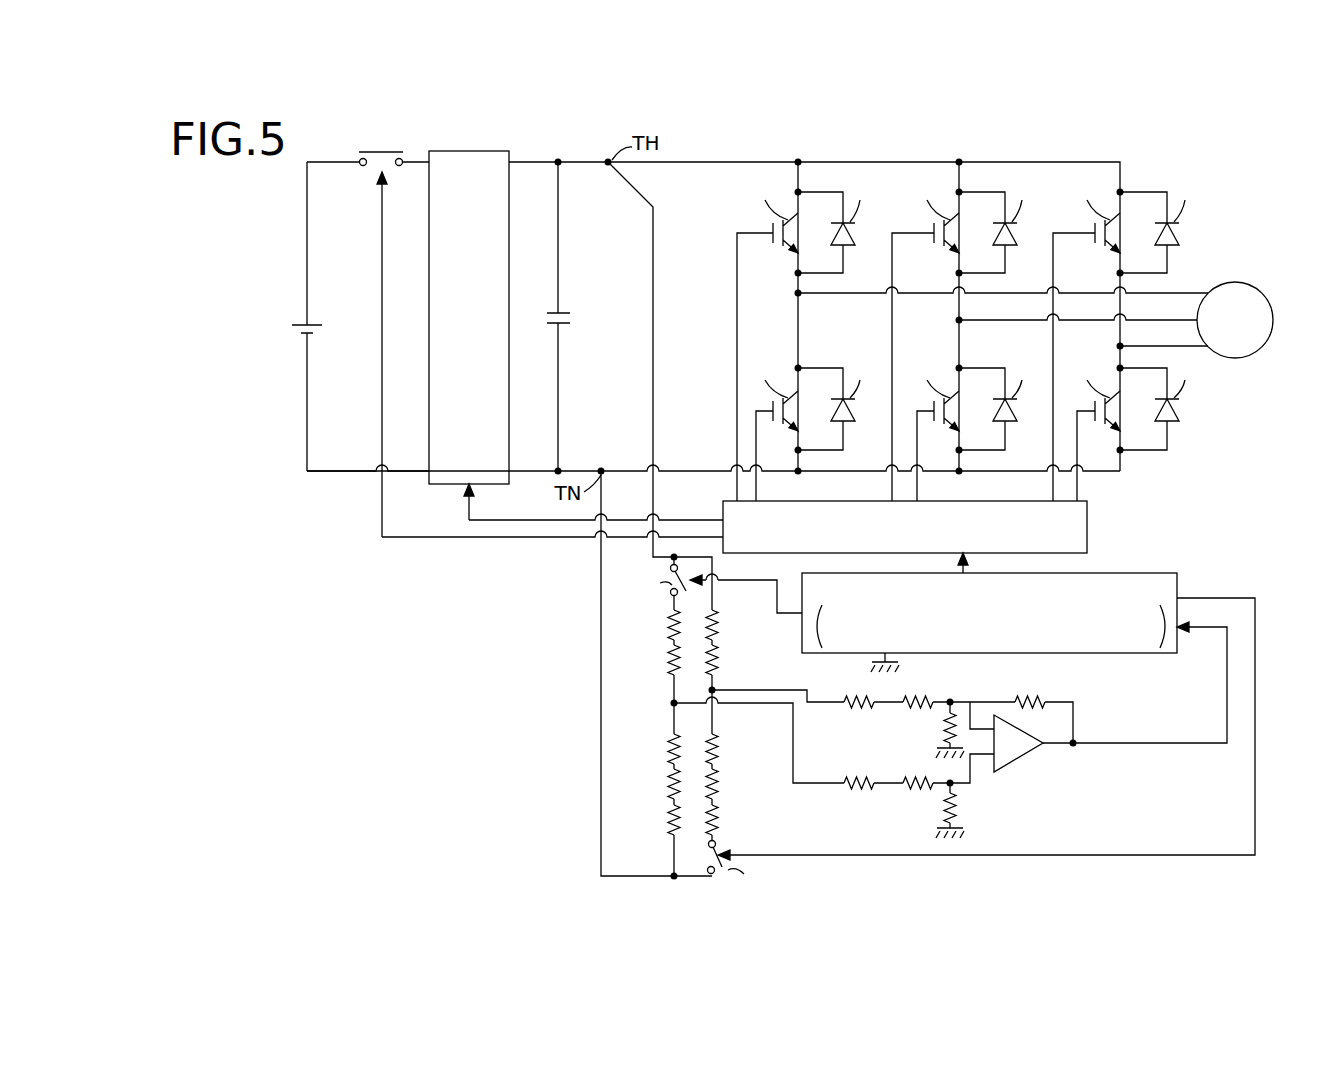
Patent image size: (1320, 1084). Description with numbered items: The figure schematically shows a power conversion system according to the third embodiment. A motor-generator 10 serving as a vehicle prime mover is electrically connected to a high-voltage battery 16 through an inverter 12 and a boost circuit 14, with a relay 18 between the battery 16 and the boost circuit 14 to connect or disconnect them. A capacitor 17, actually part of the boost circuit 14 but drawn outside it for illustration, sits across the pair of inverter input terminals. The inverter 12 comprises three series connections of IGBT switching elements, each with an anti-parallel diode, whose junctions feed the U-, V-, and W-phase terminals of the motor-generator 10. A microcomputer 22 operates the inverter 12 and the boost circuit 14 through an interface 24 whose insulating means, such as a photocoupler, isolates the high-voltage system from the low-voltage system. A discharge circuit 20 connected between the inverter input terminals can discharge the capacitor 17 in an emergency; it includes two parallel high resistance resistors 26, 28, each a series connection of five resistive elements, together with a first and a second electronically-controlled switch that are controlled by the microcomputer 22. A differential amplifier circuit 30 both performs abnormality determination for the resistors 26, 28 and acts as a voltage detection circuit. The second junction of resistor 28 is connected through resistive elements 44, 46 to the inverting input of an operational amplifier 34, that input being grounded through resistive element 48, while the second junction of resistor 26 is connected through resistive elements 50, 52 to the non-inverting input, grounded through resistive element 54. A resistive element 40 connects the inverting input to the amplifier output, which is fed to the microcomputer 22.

The motor-generator 10 is at (1243, 283).
The inverter 12 is at (1155, 171).
The boost circuit 14 is at (510, 151).
The high-voltage battery 16 is at (317, 322).
The capacitor 17 is at (566, 310).
The relay 18 is at (385, 150).
The discharge circuit 20 is at (590, 645).
The microcomputer 22 is at (1177, 576).
The interface 24 is at (1087, 530).
The high resistance resistor 26 is at (648, 612).
The high resistance resistor 28 is at (731, 612).
The differential amplifier circuit 30 is at (1066, 774).
The operational amplifier 34 is at (1021, 762).
The resistive element 40 is at (1037, 706).
The resistive element 44 is at (854, 687).
The resistive element 46 is at (918, 687).
The resistive element 48 is at (942, 722).
The resistive element 50 is at (854, 767).
The resistive element 52 is at (914, 767).
The resistive element 54 is at (942, 801).